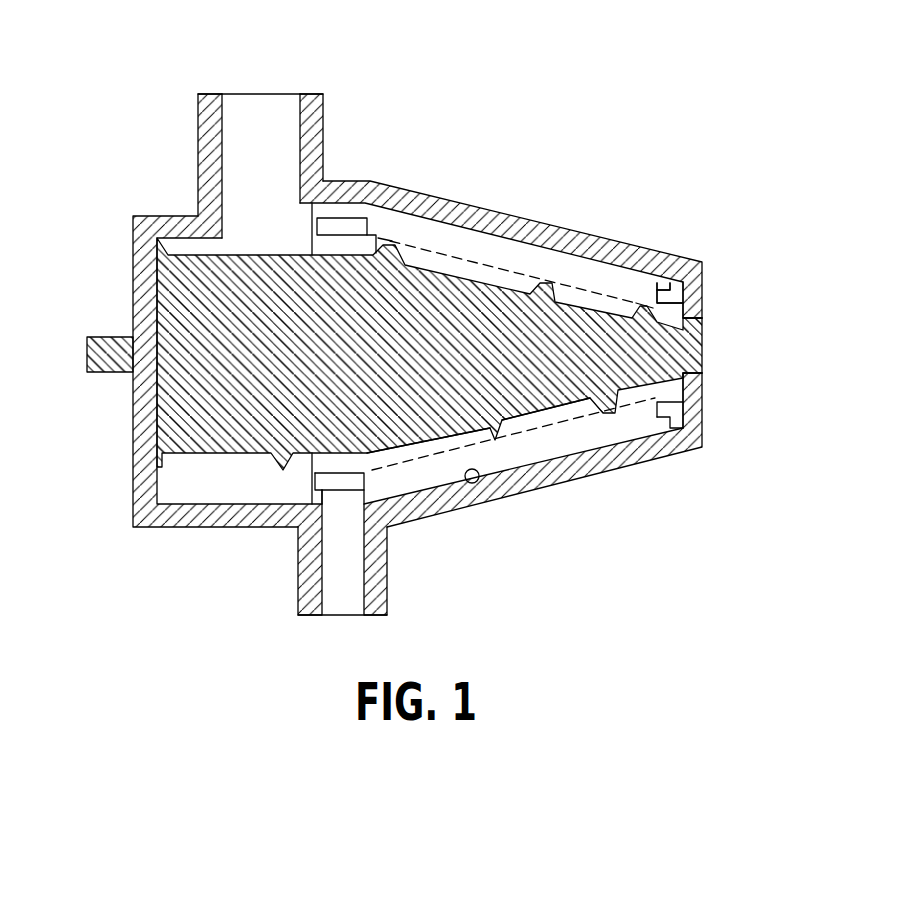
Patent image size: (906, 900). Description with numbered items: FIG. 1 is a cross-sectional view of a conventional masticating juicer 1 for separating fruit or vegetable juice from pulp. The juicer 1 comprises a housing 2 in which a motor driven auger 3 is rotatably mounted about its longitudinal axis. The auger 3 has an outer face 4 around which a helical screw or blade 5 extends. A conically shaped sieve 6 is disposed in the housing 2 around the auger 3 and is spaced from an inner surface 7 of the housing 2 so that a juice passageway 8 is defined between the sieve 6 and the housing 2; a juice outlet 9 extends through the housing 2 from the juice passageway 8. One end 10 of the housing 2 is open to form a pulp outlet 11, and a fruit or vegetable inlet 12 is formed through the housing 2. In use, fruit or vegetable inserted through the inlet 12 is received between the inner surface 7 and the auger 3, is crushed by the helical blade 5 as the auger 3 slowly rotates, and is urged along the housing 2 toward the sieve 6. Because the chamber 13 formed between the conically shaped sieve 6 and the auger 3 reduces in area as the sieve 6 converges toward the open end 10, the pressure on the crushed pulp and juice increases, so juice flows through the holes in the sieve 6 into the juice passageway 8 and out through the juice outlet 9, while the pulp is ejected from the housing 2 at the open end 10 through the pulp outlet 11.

The juicer 1 is at (432, 314).
The housing 2 is at (575, 240).
The auger 3 is at (524, 395).
The outer face 4 is at (566, 420).
The helical screw or blade 5 is at (644, 310).
The conically shaped sieve 6 is at (440, 253).
The inner surface 7 is at (473, 484).
The juice passageway 8 is at (505, 250).
The juice outlet 9 is at (342, 563).
The open end 10 is at (702, 297).
The pulp outlet 11 is at (690, 380).
The fruit or vegetable inlet 12 is at (260, 125).
The chamber 13 is at (413, 450).